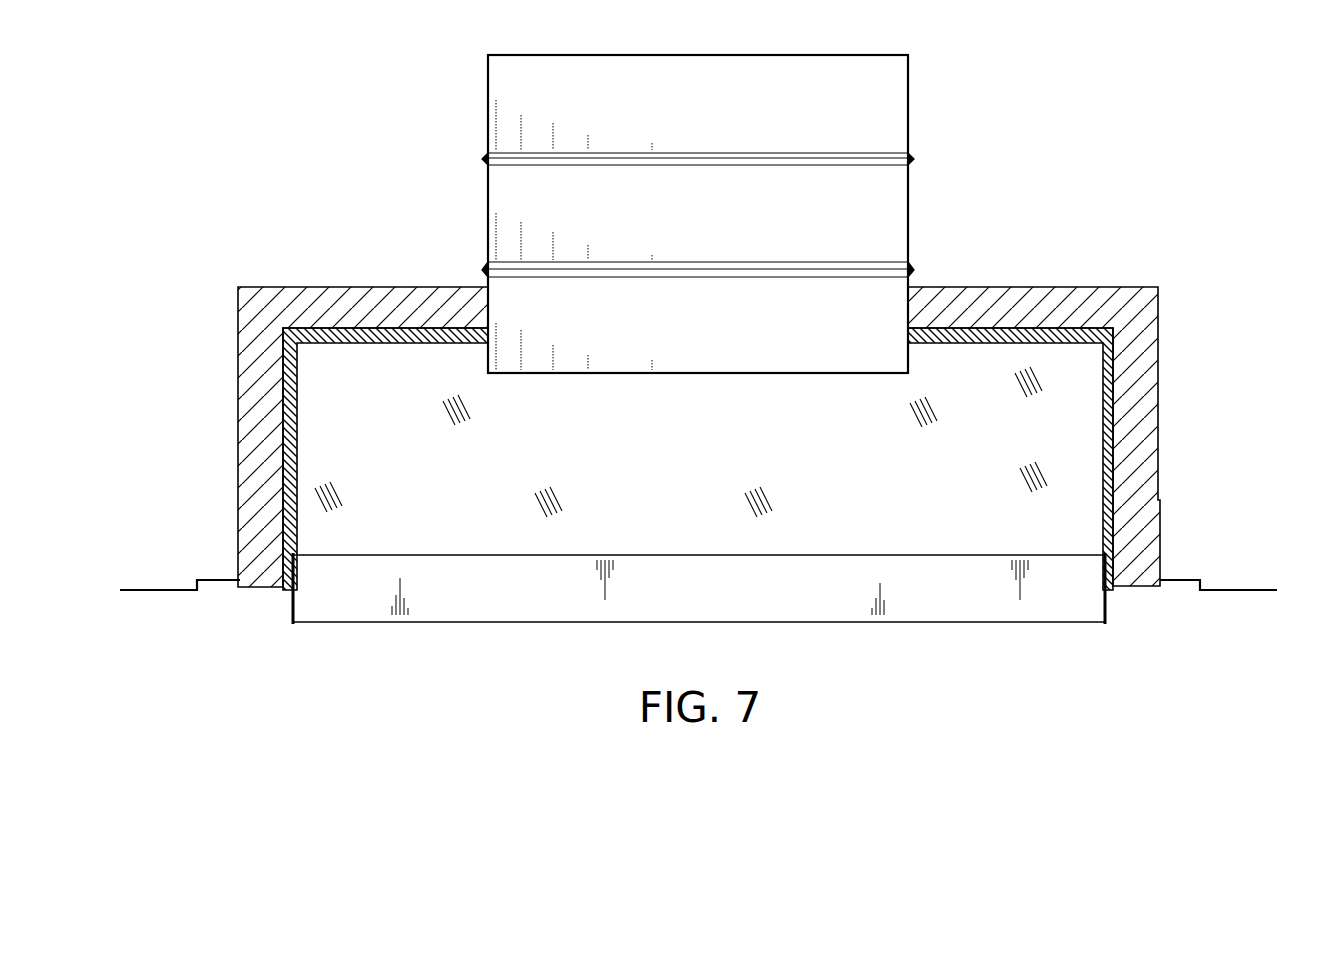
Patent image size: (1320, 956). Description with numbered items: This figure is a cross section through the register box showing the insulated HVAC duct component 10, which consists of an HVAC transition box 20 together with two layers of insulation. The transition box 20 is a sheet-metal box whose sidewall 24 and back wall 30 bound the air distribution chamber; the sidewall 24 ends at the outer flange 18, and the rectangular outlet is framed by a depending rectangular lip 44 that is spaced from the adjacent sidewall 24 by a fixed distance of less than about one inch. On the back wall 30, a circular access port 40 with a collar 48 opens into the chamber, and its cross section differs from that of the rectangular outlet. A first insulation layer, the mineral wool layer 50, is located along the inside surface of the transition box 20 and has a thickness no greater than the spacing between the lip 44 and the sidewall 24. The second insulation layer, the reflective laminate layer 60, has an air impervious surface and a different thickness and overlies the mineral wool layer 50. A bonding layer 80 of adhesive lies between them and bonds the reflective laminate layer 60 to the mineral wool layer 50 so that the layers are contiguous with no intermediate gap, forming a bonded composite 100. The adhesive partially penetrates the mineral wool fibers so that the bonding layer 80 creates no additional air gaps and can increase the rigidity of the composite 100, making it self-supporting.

The insulated HVAC duct component 10 is at (701, 346).
The outer flange 18 is at (158, 588).
The HVAC transition box 20 is at (681, 403).
The sidewall 24 is at (238, 352).
The back wall 30 is at (456, 283).
The circular access port 40 is at (703, 372).
The rectangular lip 44 is at (712, 608).
The collar 48 is at (692, 70).
The mineral wool layer 50 is at (292, 435).
The reflective laminate layer 60 is at (293, 392).
The bonding layer 80 is at (380, 328).
The bonded composite 100 is at (313, 302).